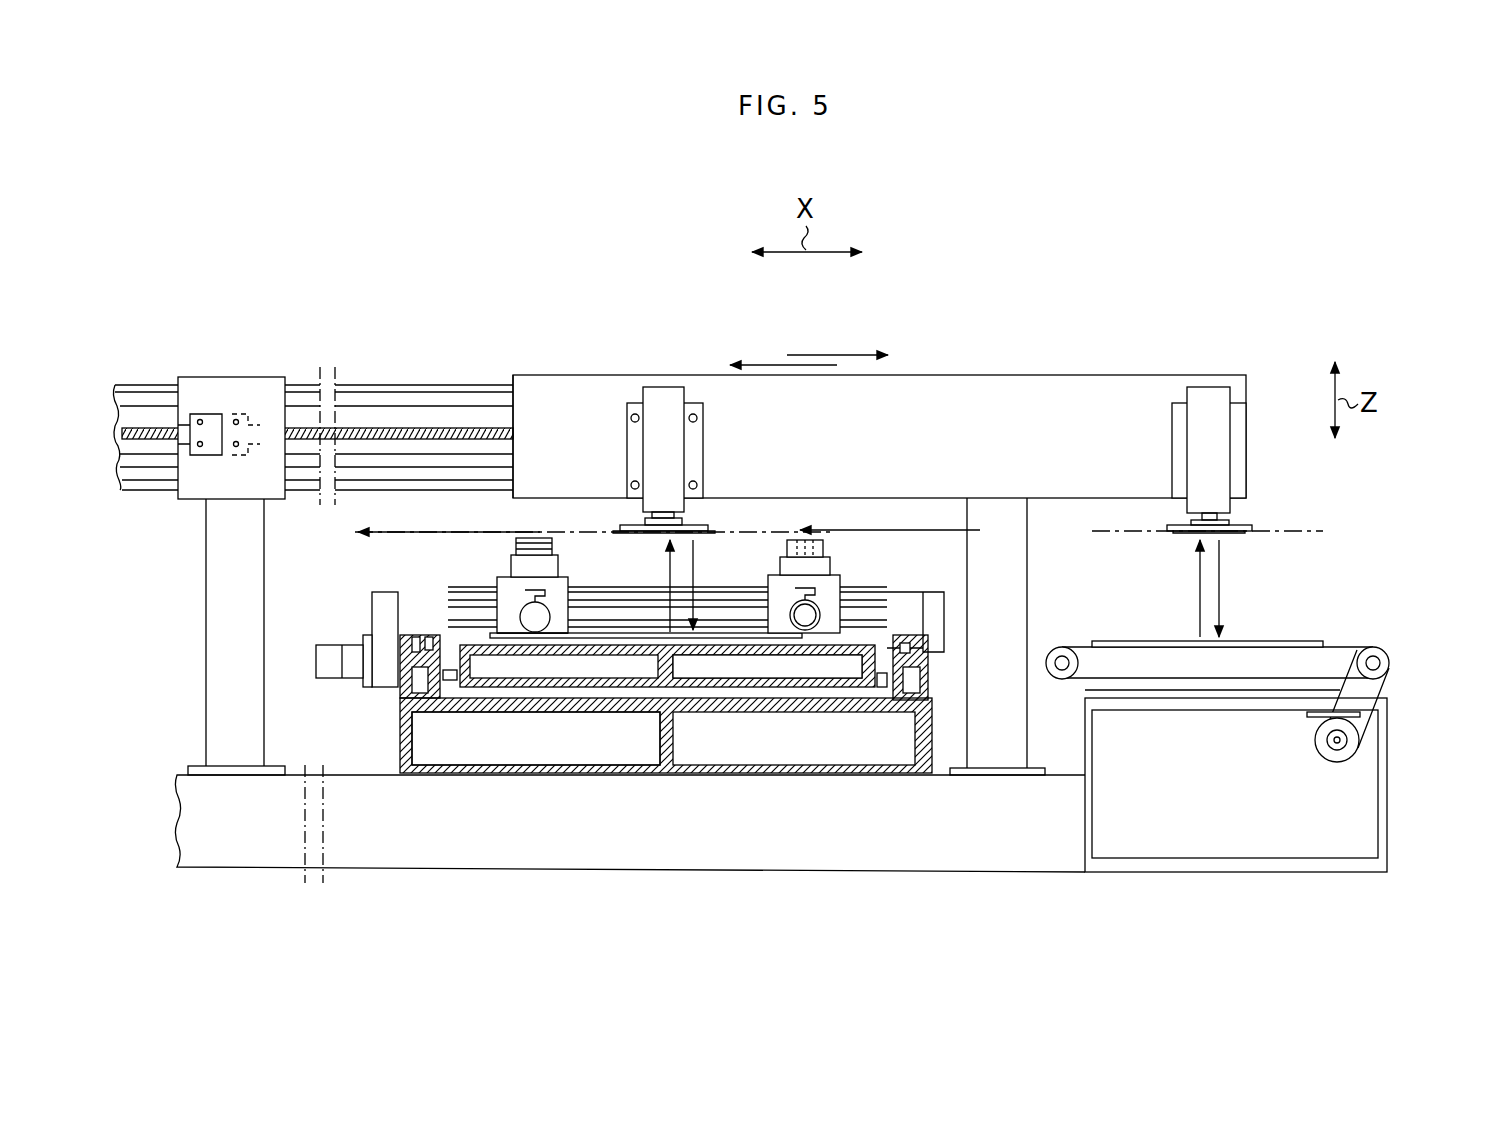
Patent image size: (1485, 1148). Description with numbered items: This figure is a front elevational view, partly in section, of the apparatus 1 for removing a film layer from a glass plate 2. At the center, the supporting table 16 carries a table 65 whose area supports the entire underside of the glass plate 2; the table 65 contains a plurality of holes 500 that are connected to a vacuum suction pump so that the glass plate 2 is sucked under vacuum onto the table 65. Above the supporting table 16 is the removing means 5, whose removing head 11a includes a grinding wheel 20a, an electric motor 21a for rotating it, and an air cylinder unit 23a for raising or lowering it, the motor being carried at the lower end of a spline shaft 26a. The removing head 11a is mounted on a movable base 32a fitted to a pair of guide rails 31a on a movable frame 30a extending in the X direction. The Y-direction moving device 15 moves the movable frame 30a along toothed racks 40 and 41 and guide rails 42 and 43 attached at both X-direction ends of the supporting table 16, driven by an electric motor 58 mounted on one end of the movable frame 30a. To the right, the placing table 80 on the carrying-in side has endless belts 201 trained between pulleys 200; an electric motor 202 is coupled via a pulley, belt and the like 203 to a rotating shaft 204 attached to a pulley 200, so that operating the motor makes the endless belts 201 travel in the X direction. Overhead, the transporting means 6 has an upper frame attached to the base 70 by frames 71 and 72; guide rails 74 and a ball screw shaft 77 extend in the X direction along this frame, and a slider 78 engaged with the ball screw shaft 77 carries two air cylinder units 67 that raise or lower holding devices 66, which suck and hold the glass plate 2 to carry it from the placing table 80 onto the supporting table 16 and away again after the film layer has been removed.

The apparatus 1 is at (1131, 332).
The glass plate 2 is at (752, 530).
The removing means 5 is at (619, 680).
The transporting means 6 is at (588, 360).
The removing head 11a is at (575, 572).
The Y-direction moving device 15 is at (312, 647).
The supporting table 16 is at (728, 775).
The grinding wheel 20a is at (555, 640).
The electric motor 21a is at (535, 632).
The air cylinder unit 23a is at (552, 545).
The spline shaft 26a is at (511, 563).
The movable frame 30a is at (928, 606).
The guide rails 31a is at (727, 600).
The movable base 32a is at (505, 632).
The toothed rack 40 is at (383, 688).
The toothed rack 41 is at (925, 655).
The guide rail 42 is at (425, 648).
The guide rail 43 is at (905, 645).
The electric motor 58 is at (340, 680).
The table 65 is at (624, 650).
The holding device 66 is at (700, 528).
The air cylinder unit 67 is at (680, 393).
The base 70 is at (886, 873).
The frame 71 is at (206, 652).
The frame 72 is at (1027, 587).
The guide rails 74 is at (140, 395).
The ball screw shaft 77 is at (178, 430).
The slider 78 is at (545, 395).
The placing table 80 is at (1255, 873).
The pulleys 200 is at (1060, 680).
The endless belts 201 is at (1356, 645).
The electric motor 202 is at (1325, 752).
The pulley, belt, and the like 203 is at (1352, 717).
The rotating shaft 204 is at (1378, 663).
The holes 500 is at (726, 660).